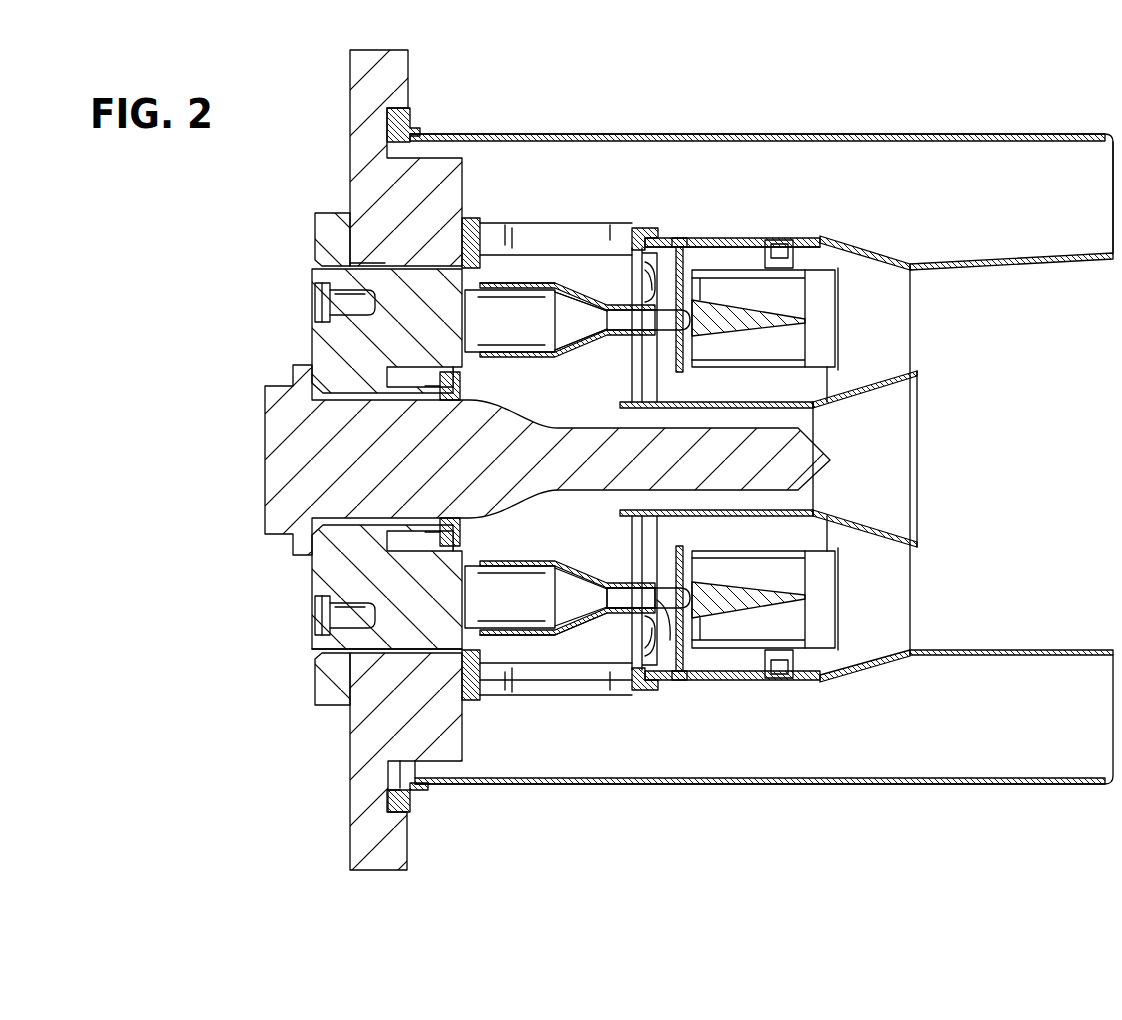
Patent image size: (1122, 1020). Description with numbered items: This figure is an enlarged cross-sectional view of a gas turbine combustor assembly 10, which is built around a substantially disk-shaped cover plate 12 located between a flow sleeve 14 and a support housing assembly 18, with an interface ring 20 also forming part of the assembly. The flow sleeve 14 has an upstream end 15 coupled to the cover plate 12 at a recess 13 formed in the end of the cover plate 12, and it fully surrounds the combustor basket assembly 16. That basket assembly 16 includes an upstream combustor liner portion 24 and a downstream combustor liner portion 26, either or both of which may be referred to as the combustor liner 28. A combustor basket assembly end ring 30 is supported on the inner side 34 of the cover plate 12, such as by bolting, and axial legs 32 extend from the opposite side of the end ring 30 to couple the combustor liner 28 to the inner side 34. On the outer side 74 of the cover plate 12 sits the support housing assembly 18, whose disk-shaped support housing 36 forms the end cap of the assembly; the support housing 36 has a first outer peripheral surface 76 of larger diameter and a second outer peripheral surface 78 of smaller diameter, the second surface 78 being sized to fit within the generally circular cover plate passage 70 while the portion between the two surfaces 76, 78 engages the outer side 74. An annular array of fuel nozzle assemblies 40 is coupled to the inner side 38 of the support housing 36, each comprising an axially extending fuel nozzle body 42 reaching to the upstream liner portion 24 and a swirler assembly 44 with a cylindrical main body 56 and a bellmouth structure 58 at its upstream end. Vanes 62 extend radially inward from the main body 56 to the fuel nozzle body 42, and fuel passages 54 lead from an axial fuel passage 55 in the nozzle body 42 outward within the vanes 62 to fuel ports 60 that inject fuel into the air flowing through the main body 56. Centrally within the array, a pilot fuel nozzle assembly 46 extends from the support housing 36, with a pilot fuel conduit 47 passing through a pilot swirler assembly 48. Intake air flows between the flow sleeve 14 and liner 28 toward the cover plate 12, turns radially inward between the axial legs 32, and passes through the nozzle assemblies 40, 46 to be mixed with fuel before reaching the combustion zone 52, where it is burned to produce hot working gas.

The gas turbine combustor assembly 10 is at (985, 92).
The cover plate 12 is at (382, 878).
The recess 13 is at (405, 130).
The flow sleeve 14 is at (985, 790).
The upstream end 15 is at (410, 812).
The combustor basket assembly 16 is at (718, 732).
The support housing assembly 18 is at (243, 646).
The interface ring 20 is at (648, 232).
The upstream combustor liner portion 24 is at (795, 240).
The downstream combustor liner portion 26 is at (1040, 252).
The combustor liner 28 is at (757, 238).
The combustor basket assembly end ring 30 is at (472, 700).
The axial legs 32 is at (562, 234).
The inner side 34 is at (511, 698).
The support housing 36 is at (315, 685).
The inner side 38 is at (494, 638).
The fuel nozzle assemblies 40 is at (535, 362).
The fuel nozzle body 42 is at (581, 281).
The swirler assembly 44 is at (697, 258).
The pilot fuel nozzle assembly 46 is at (225, 518).
The pilot fuel conduit 47 is at (603, 490).
The pilot swirler assembly 48 is at (795, 520).
The combustion zone 52 is at (996, 431).
The fuel passages 54 is at (662, 354).
The axial fuel passage 55 is at (560, 306).
The main body 56 is at (716, 262).
The bellmouth structure 58 is at (690, 369).
The fuel ports 60 is at (665, 626).
The vanes 62 is at (679, 238).
The cover plate passage 70 is at (402, 647).
The outer side 74 is at (350, 790).
The first outer peripheral surface 76 is at (315, 213).
The second outer peripheral surface 78 is at (383, 266).